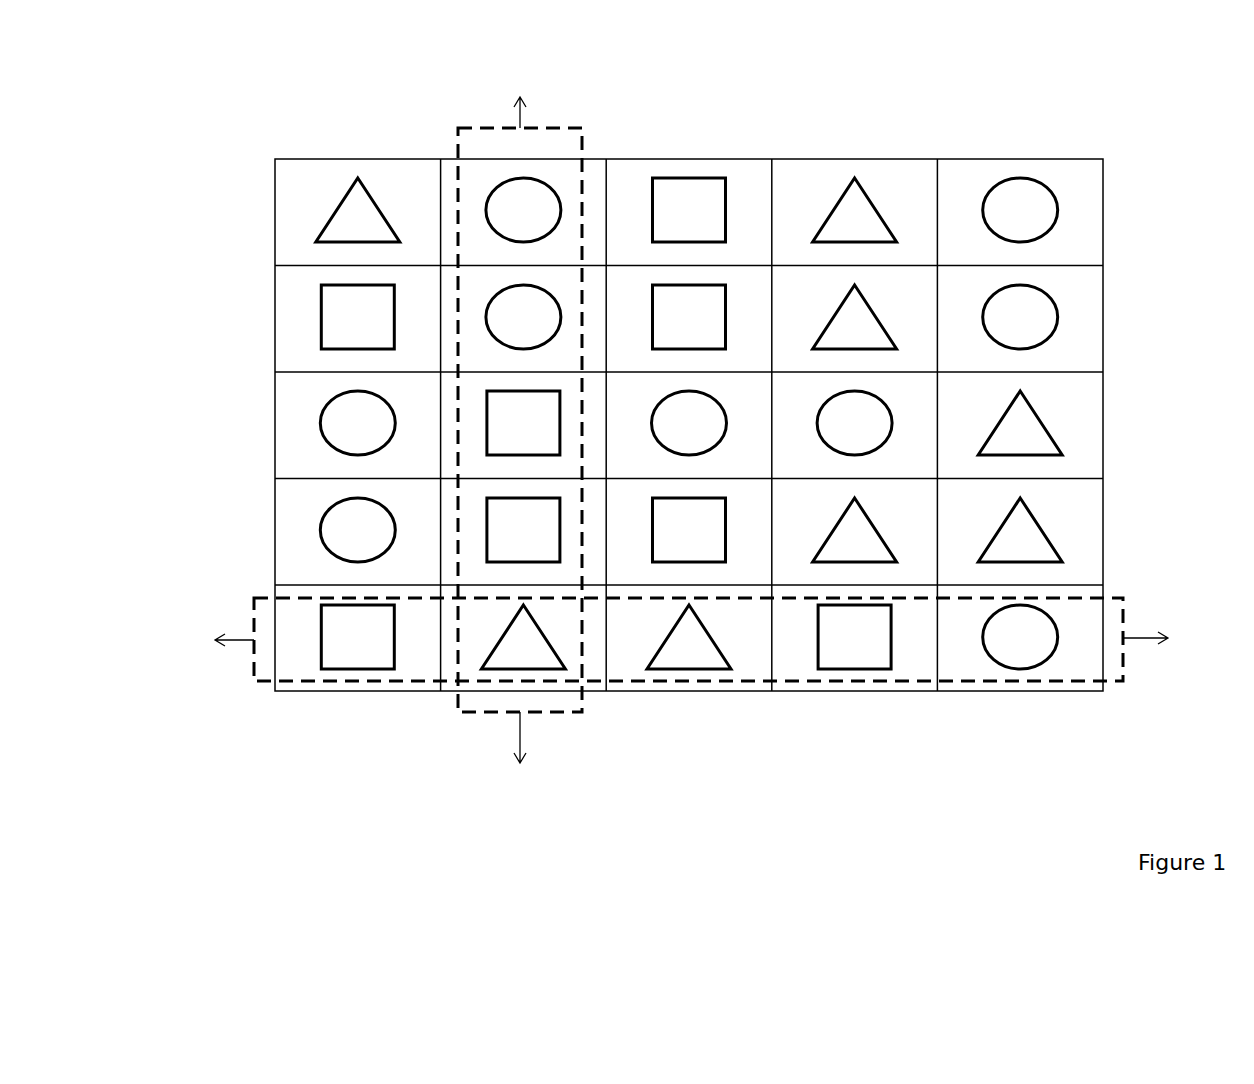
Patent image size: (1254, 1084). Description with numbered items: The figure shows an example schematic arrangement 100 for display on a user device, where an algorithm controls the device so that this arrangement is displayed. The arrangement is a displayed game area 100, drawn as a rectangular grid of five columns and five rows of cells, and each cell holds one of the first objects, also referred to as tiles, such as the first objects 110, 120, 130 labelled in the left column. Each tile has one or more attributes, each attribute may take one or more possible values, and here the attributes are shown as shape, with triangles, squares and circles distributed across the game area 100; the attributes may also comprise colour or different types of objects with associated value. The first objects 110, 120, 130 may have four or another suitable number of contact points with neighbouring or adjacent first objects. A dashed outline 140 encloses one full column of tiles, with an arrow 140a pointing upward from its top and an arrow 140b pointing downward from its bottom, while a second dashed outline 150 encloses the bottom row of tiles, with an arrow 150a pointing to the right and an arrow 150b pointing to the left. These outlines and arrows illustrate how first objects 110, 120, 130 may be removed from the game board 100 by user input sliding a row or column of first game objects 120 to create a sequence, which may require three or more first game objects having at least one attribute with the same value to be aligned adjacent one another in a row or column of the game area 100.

The game area 100 is at (631, 503).
The first object 110 is at (330, 212).
The first object 120 is at (315, 322).
The first object 130 is at (312, 424).
The column region 140 is at (570, 128).
The column direction (up) 140a is at (525, 98).
The column direction (down) 140b is at (522, 738).
The row region 150 is at (1123, 598).
The row direction (right) 150a is at (1145, 640).
The row direction (left) 150b is at (235, 640).